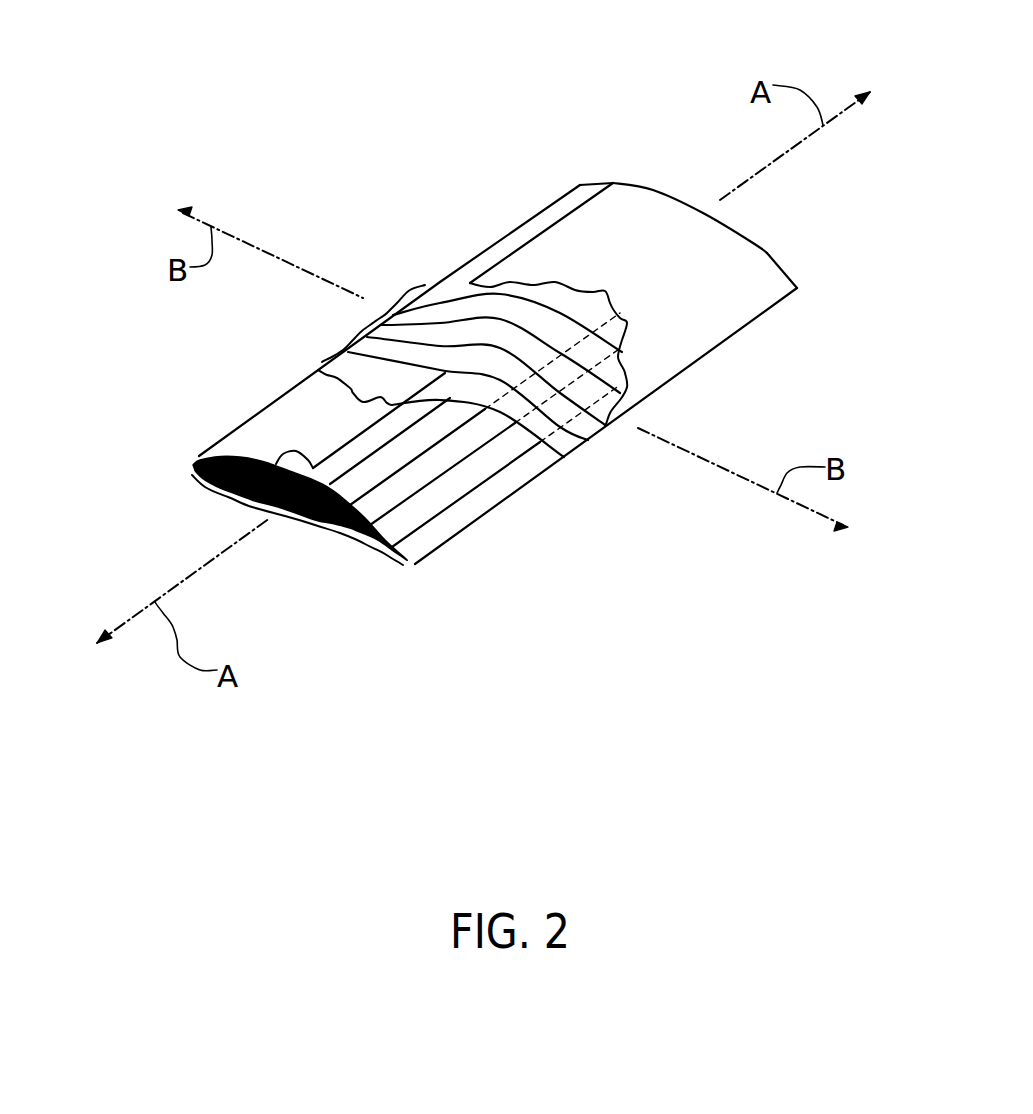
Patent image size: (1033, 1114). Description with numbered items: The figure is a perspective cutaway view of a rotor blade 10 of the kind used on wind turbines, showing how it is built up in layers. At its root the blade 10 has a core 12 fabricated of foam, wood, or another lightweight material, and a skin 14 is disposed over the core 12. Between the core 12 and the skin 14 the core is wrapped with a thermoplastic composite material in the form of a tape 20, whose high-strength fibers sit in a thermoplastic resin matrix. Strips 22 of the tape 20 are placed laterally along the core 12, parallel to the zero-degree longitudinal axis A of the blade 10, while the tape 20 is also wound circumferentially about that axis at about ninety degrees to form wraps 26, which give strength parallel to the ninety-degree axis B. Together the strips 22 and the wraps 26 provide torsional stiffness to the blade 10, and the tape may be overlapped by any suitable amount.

The rotor blade 10 is at (515, 101).
The core 12 is at (213, 475).
The skin 14 is at (733, 282).
The tape 20 is at (477, 323).
The strips 22 is at (323, 533).
The wraps 26 is at (373, 320).